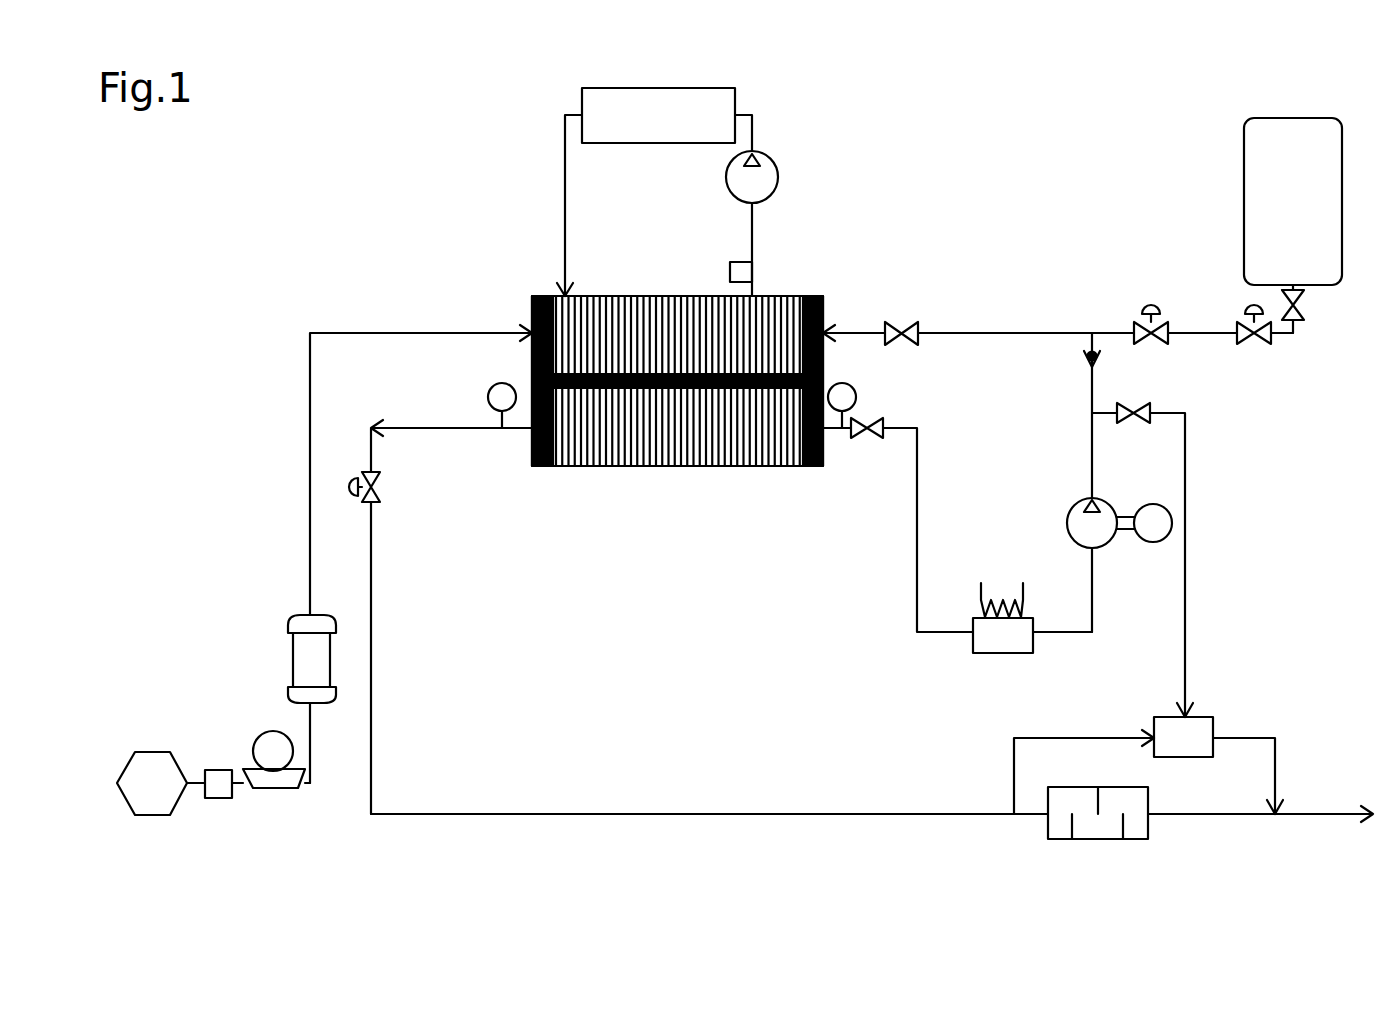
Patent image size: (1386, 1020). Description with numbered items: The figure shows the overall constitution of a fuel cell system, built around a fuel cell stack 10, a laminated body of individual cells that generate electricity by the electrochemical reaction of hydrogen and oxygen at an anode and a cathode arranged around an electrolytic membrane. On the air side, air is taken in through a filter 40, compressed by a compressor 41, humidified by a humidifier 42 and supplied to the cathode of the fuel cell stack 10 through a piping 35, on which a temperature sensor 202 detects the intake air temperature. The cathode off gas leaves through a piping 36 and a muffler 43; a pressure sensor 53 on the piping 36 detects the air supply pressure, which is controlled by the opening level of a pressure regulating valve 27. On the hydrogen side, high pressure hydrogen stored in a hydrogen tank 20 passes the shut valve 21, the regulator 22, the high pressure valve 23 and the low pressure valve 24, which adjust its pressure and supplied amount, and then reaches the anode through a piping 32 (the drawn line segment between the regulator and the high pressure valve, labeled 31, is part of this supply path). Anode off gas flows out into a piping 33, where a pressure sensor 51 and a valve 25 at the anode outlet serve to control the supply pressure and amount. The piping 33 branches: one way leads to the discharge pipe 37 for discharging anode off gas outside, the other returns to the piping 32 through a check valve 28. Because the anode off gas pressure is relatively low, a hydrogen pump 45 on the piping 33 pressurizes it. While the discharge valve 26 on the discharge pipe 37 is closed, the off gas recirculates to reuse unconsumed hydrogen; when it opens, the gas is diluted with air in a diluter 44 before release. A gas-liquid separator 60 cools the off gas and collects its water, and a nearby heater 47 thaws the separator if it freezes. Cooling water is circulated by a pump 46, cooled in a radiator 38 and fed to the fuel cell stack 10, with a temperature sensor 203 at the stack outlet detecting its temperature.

The fuel cell stack 10 is at (568, 466).
The hydrogen tank 20 is at (1244, 197).
The shut valve 21 is at (1302, 306).
The regulator 22 is at (1257, 346).
The high pressure valve 23 is at (1162, 326).
The low pressure valve 24 is at (915, 338).
The valve 25 is at (870, 440).
The discharge valve 26 is at (1136, 423).
The pressure regulating valve 27 is at (380, 492).
The check valve 28 is at (1085, 360).
The hydrogen supply pipe 31 is at (1192, 335).
The piping 32 is at (997, 333).
The piping 33 is at (917, 566).
The piping 35 is at (402, 333).
The piping 36 is at (460, 430).
The discharge pipe 37 is at (752, 127).
The radiator 38 is at (737, 100).
The filter 40 is at (152, 752).
The compressor 41 is at (275, 790).
The humidifier 42 is at (324, 672).
The muffler 43 is at (1148, 822).
The diluter 44 is at (1213, 718).
The hydrogen pump 45 is at (1106, 541).
The pump 46 is at (778, 173).
The heater 47 is at (980, 598).
The pressure sensor 51 is at (856, 397).
The pressure sensor 53 is at (488, 397).
The gas-liquid separator 60 is at (1033, 647).
The temperature sensor 202 is at (222, 798).
The temperature sensor 203 is at (730, 272).